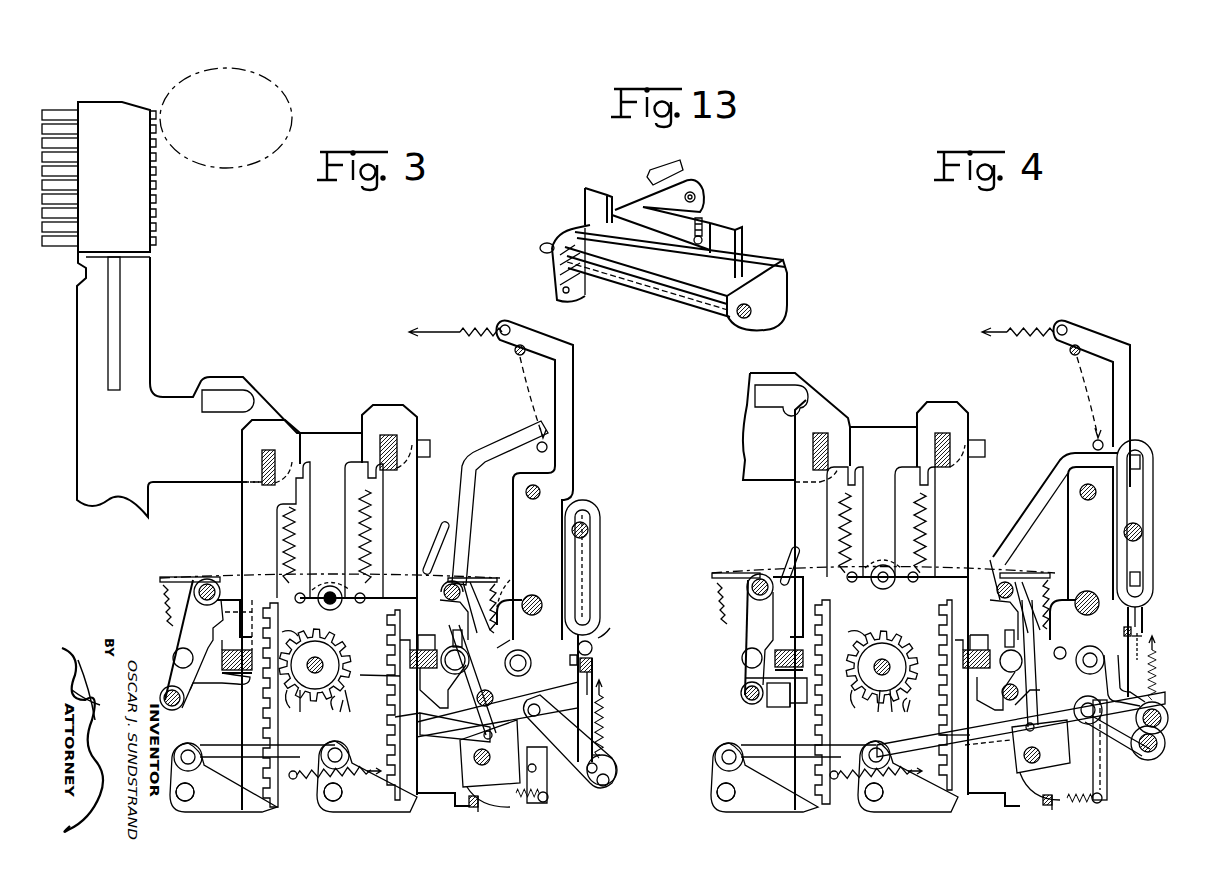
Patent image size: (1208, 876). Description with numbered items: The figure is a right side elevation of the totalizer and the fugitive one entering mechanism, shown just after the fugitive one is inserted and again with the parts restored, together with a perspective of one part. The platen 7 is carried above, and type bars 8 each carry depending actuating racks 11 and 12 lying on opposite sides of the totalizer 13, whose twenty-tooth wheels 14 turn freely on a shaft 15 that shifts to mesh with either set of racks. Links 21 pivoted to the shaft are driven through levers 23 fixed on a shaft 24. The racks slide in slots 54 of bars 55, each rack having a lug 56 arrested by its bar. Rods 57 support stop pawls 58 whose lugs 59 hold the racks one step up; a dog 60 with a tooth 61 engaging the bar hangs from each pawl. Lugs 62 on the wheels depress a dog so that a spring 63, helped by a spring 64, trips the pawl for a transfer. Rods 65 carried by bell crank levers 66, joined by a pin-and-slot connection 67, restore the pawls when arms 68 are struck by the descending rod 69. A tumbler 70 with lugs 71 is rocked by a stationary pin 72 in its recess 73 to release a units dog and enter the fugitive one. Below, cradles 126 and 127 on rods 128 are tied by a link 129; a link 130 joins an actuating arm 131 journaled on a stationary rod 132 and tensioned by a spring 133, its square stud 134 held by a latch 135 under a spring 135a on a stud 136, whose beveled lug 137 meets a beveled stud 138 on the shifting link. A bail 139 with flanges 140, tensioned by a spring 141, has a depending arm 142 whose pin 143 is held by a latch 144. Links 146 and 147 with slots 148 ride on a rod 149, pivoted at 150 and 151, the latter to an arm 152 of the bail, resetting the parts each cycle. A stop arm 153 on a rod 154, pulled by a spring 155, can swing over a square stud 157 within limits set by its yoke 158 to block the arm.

In FIG. 3, the platen 7 is at (243, 152).
In FIG. 3, the type bars 8 is at (146, 332).
In FIG. 3, the actuating rack 11 is at (412, 502).
In FIG. 4, the actuating rack 11 is at (968, 517).
In FIG. 3, the actuating rack 12 is at (241, 540).
In FIG. 4, the actuating rack 12 is at (795, 528).
In FIG. 3, the totalizer 13 is at (303, 715).
In FIG. 4, the totalizer 13 is at (890, 714).
In FIG. 3, the wheels 14 is at (345, 705).
In FIG. 4, the wheels 14 is at (908, 704).
In FIG. 3, the shaft 15 is at (323, 666).
In FIG. 4, the shaft 15 is at (874, 668).
In FIG. 3, the links 21 is at (466, 672).
In FIG. 4, the links 21 is at (1076, 664).
In FIG. 3, the levers 23 is at (536, 703).
In FIG. 4, the levers 23 is at (1035, 665).
In FIG. 3, the shaft 24 is at (524, 651).
In FIG. 4, the shaft 24 is at (1066, 637).
In FIG. 3, the slots 54 is at (252, 628).
In FIG. 4, the slots 54 is at (869, 662).
In FIG. 3, the bars 55 is at (329, 651).
In FIG. 4, the bars 55 is at (1014, 645).
In FIG. 3, the lug 56 is at (236, 610).
In FIG. 4, the lug 56 is at (803, 612).
In FIG. 3, the rods 57 is at (198, 580).
In FIG. 4, the rods 57 is at (756, 578).
In FIG. 3, the stop pawls 58 is at (178, 618).
In FIG. 4, the stop pawls 58 is at (745, 612).
In FIG. 3, the lug 59 is at (172, 650).
In FIG. 4, the lug 59 is at (775, 640).
In FIG. 3, the dog 60 is at (220, 690).
In FIG. 4, the dog 60 is at (745, 680).
In FIG. 3, the tooth 61 is at (240, 700).
In FIG. 4, the tooth 61 is at (795, 705).
In FIG. 3, the lugs 62 is at (330, 722).
In FIG. 4, the lugs 62 is at (907, 722).
In FIG. 3, the spring 63 is at (160, 588).
In FIG. 4, the spring 63 is at (716, 586).
In FIG. 3, the spring 64 is at (356, 548).
In FIG. 4, the spring 64 is at (912, 515).
In FIG. 3, the rods 65 is at (160, 694).
In FIG. 4, the rods 65 is at (744, 700).
In FIG. 3, the bell crank levers 66 is at (438, 538).
In FIG. 4, the bell crank levers 66 is at (783, 575).
In FIG. 3, the pin-and-slot connection 67 is at (334, 588).
In FIG. 4, the pin-and-slot connection 67 is at (887, 560).
In FIG. 3, the arms 68 is at (472, 460).
In FIG. 4, the arms 68 is at (1060, 458).
In FIG. 3, the rod 69 is at (514, 352).
In FIG. 4, the rod 69 is at (1070, 355).
In FIG. 3, the tumbler 70 is at (340, 612).
In FIG. 4, the tumbler 70 is at (900, 598).
In FIG. 3, the lugs 71 is at (270, 680).
In FIG. 4, the lugs 71 is at (938, 612).
In FIG. 3, the stationary pin 72 is at (350, 714).
In FIG. 4, the stationary pin 72 is at (870, 716).
In FIG. 3, the recess 73 is at (288, 710).
In FIG. 4, the recess 73 is at (841, 713).
In FIG. 3, the cradle 126 is at (370, 813).
In FIG. 4, the cradle 126 is at (915, 804).
In FIG. 3, the cradle 127 is at (215, 813).
In FIG. 4, the cradle 127 is at (775, 804).
In FIG. 3, the rods 128 is at (180, 798).
In FIG. 4, the rods 128 is at (730, 800).
In FIG. 3, the link 129 is at (218, 765).
In FIG. 4, the link 129 is at (770, 760).
In FIG. 3, the link 130 is at (450, 750).
In FIG. 4, the link 130 is at (900, 762).
In FIG. 3, the actuating arm 131 is at (616, 765).
In FIG. 4, the actuating arm 131 is at (1112, 765).
In FIG. 3, the stationary rod 132 is at (486, 790).
In FIG. 13, the stationary rod 132 is at (665, 300).
In FIG. 4, the stationary rod 132 is at (1014, 760).
In FIG. 3, the spring 133 is at (603, 700).
In FIG. 4, the spring 133 is at (1155, 672).
In FIG. 3, the square stud 134 is at (560, 800).
In FIG. 4, the square stud 134 is at (1135, 760).
In FIG. 3, the latch 135 is at (600, 725).
In FIG. 4, the latch 135 is at (1108, 795).
In FIG. 3, the spring 135a is at (545, 803).
In FIG. 4, the spring 135a is at (1097, 805).
In FIG. 3, the stud 136 is at (594, 678).
In FIG. 3, the beveled lug 137 is at (442, 733).
In FIG. 4, the beveled lug 137 is at (987, 742).
In FIG. 3, the beveled stud 138 is at (358, 682).
In FIG. 4, the beveled stud 138 is at (958, 743).
In FIG. 3, the bail 139 is at (508, 808).
In FIG. 13, the bail 139 is at (785, 292).
In FIG. 4, the bail 139 is at (1025, 790).
In FIG. 3, the flanges 140 is at (498, 648).
In FIG. 13, the flanges 140 is at (585, 210).
In FIG. 4, the flanges 140 is at (1034, 697).
In FIG. 3, the spring 141 is at (600, 745).
In FIG. 4, the spring 141 is at (1088, 701).
In FIG. 3, the depending arm 142 is at (468, 803).
In FIG. 13, the depending arm 142 is at (582, 294).
In FIG. 4, the depending arm 142 is at (1043, 805).
In FIG. 3, the pin 143 is at (478, 812).
In FIG. 13, the pin 143 is at (560, 290).
In FIG. 4, the pin 143 is at (1052, 812).
In FIG. 3, the latch 144 is at (420, 805).
In FIG. 4, the latch 144 is at (975, 798).
In FIG. 3, the link 146 is at (611, 627).
In FIG. 4, the link 146 is at (1145, 640).
In FIG. 3, the link 147 is at (595, 653).
In FIG. 13, the link 147 is at (668, 173).
In FIG. 4, the link 147 is at (1138, 624).
In FIG. 3, the slots 148 is at (600, 580).
In FIG. 4, the slots 148 is at (1143, 460).
In FIG. 3, the rod 149 is at (590, 535).
In FIG. 4, the rod 149 is at (1143, 535).
In FIG. 4, the pivot 150 is at (1165, 744).
In FIG. 13, the pivot 151 is at (696, 200).
In FIG. 4, the pivot 151 is at (1168, 714).
In FIG. 3, the arm 152 is at (610, 790).
In FIG. 13, the arm 152 is at (645, 205).
In FIG. 4, the arm 152 is at (1162, 755).
In FIG. 3, the stop arm 153 is at (573, 380).
In FIG. 4, the stop arm 153 is at (1131, 382).
In FIG. 3, the rod 154 is at (526, 494).
In FIG. 4, the rod 154 is at (1088, 492).
In FIG. 3, the spring 155 is at (470, 340).
In FIG. 4, the spring 155 is at (1030, 341).
In FIG. 3, the square stud 157 is at (592, 650).
In FIG. 4, the square stud 157 is at (1171, 616).
In FIG. 3, the yoke 158 is at (518, 596).
In FIG. 4, the yoke 158 is at (1072, 596).